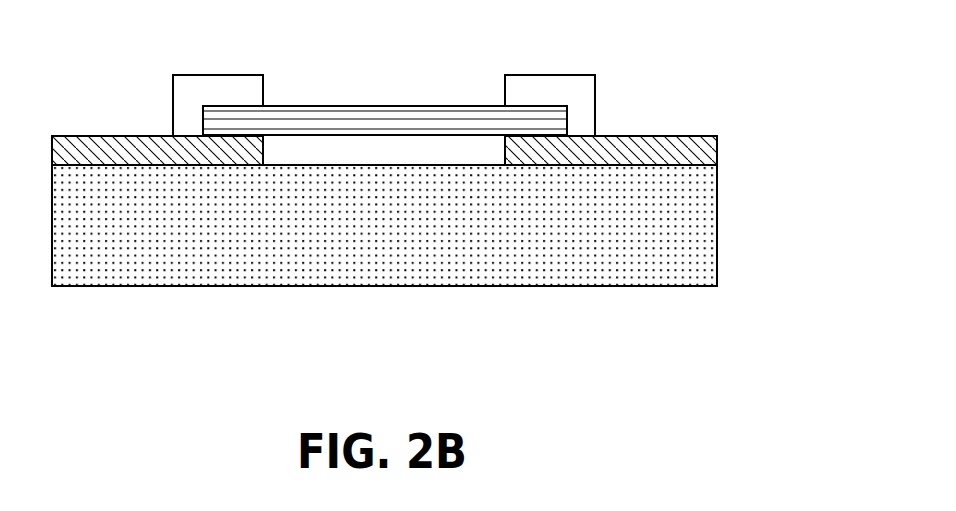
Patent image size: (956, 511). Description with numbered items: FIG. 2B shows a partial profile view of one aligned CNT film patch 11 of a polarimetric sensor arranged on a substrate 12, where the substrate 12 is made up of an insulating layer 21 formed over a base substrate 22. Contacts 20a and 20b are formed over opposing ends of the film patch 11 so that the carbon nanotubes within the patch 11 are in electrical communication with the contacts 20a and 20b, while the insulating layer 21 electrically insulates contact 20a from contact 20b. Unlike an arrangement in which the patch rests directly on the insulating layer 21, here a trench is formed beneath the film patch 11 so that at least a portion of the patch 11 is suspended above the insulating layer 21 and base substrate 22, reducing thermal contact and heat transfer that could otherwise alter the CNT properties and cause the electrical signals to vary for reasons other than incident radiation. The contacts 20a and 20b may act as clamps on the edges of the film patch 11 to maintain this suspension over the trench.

The aligned CNT film patch 11 is at (340, 106).
The substrate 12 is at (437, 174).
The contact 20a is at (203, 75).
The contact 20b is at (552, 75).
The insulating layer 21 is at (67, 136).
The base substrate 22 is at (175, 271).